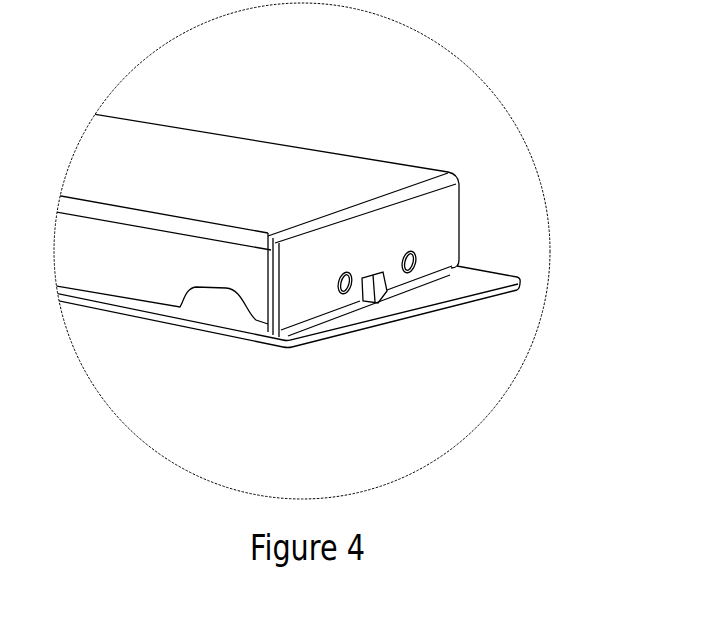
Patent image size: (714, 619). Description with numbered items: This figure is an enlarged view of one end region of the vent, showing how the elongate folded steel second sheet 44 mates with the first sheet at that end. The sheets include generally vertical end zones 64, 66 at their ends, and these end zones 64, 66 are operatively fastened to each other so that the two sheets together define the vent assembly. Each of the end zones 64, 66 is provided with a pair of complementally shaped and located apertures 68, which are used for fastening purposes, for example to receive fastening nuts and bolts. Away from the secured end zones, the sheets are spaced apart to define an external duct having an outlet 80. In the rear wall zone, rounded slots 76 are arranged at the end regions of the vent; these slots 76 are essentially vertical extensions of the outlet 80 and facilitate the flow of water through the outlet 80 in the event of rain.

The second sheet 44 is at (320, 238).
The end zone 64 is at (415, 233).
The end zone 66 is at (380, 287).
The apertures 68 is at (425, 268).
The rounded slots 76 is at (232, 308).
The outlet 80 is at (152, 311).